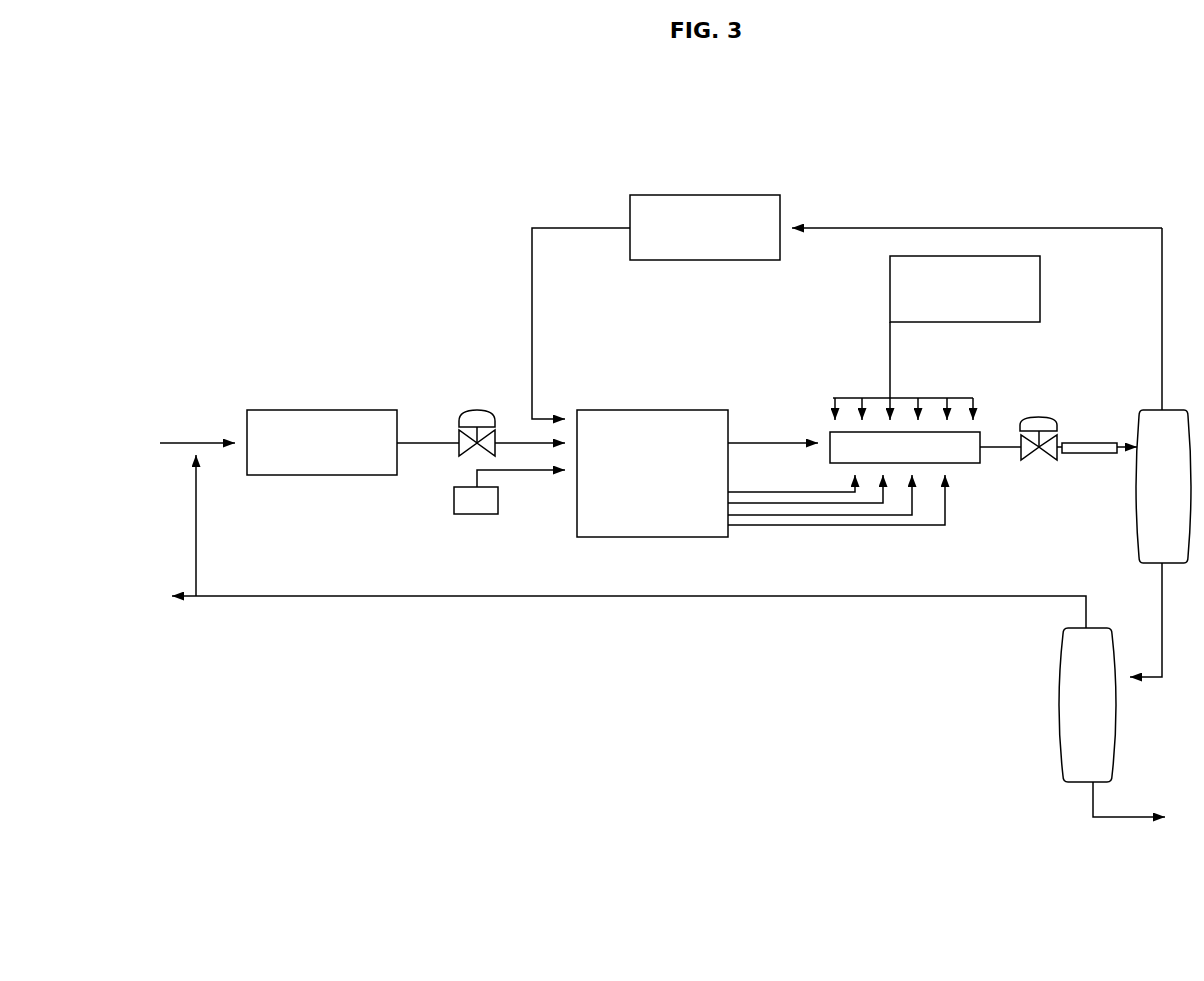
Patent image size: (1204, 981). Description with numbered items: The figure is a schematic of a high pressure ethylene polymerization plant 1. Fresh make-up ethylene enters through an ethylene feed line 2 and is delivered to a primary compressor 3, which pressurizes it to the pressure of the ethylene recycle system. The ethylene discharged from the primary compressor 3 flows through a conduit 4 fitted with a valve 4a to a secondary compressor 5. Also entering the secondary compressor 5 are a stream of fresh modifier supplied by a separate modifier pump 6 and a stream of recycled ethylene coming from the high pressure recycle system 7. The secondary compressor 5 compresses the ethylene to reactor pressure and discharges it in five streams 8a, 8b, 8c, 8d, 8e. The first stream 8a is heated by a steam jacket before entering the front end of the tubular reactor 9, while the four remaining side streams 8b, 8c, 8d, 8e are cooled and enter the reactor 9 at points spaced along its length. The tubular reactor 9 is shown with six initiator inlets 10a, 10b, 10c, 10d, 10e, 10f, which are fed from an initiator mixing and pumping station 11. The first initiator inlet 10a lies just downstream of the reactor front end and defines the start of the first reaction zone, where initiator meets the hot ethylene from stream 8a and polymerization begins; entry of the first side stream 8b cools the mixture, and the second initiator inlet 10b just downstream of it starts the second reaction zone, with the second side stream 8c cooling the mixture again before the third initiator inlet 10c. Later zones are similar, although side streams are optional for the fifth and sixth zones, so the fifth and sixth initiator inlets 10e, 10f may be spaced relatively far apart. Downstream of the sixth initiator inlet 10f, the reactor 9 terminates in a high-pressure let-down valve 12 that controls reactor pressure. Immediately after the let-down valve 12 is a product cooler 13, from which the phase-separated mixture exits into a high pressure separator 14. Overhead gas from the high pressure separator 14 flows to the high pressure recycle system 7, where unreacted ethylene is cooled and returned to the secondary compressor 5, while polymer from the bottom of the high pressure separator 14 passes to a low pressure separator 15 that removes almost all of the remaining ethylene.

The polymerization plant 1 is at (377, 188).
The ethylene feed line 2 is at (173, 442).
The primary compressor 3 is at (320, 465).
The conduit 4 is at (425, 442).
The valve 4a is at (477, 410).
The secondary compressor 5 is at (615, 475).
The modifier pump 6 is at (463, 498).
The high pressure recycle system 7 is at (677, 212).
The ethylene stream 8a is at (783, 440).
The first side stream 8b is at (738, 492).
The second side stream 8c is at (778, 503).
The ethylene side stream 8d is at (828, 515).
The ethylene side stream 8e is at (872, 525).
The tubular reactor 9 is at (963, 465).
The first initiator inlet 10a is at (833, 408).
The second initiator inlet 10b is at (862, 405).
The third initiator inlet 10c is at (887, 405).
The fourth initiator inlet 10d is at (918, 405).
The fifth initiator inlet 10e is at (947, 403).
The sixth initiator inlet 10f is at (973, 415).
The initiator mixing and pumping station 11 is at (1028, 290).
The high-pressure let-down valve 12 is at (1040, 423).
The product cooler 13 is at (1083, 448).
The high pressure separator 14 is at (1157, 510).
The low pressure separator 15 is at (1082, 668).